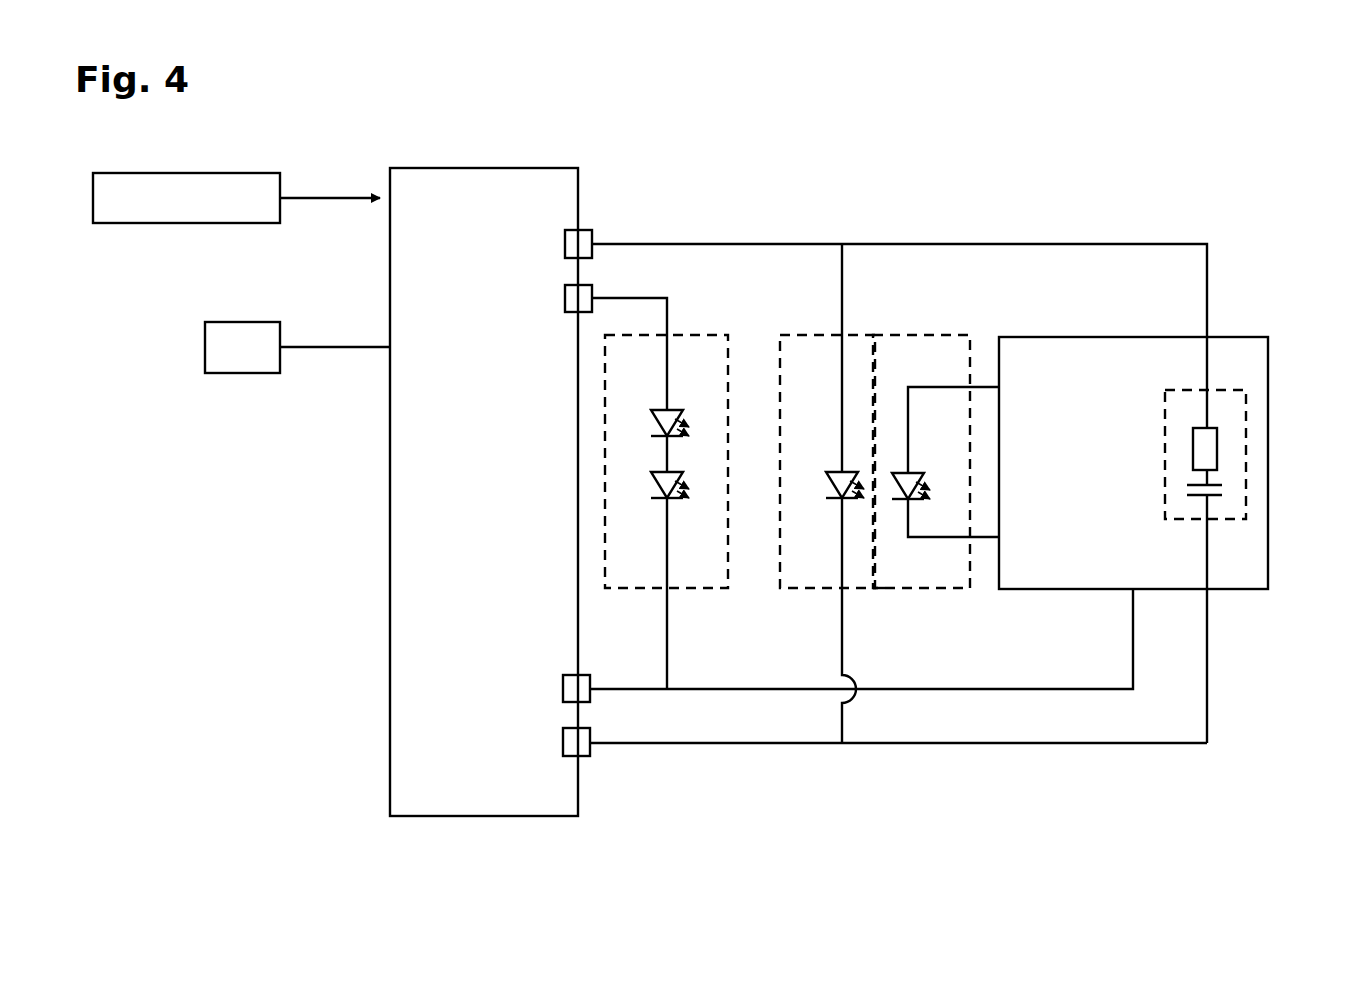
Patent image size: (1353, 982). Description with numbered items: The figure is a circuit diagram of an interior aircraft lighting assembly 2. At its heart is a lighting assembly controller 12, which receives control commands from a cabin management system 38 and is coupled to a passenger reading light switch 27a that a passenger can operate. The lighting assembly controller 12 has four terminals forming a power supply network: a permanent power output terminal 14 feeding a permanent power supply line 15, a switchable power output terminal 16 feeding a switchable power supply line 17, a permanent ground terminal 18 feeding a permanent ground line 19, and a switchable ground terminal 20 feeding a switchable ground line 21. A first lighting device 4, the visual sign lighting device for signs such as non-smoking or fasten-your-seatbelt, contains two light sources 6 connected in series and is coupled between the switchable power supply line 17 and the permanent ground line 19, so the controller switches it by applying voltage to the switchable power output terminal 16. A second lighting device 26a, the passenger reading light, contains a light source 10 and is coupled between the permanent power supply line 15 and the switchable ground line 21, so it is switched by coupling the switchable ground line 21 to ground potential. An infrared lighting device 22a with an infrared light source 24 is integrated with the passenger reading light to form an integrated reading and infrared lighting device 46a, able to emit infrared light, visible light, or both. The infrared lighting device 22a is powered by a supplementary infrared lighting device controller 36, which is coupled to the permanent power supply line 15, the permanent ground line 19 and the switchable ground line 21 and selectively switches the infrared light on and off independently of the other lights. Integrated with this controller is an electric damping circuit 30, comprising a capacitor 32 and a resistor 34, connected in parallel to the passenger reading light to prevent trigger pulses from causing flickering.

The interior aircraft lighting assembly 2 is at (1180, 158).
The first lighting device 4 is at (728, 322).
The light source 6 is at (648, 420).
The light source 10 is at (828, 472).
The lighting assembly controller 12 is at (390, 537).
The permanent power output terminal 14 is at (565, 243).
The permanent power supply line 15 is at (953, 244).
The switchable power output terminal 16 is at (565, 299).
The switchable power supply line 17 is at (640, 298).
The permanent ground terminal 18 is at (563, 688).
The permanent ground line 19 is at (1038, 689).
The switchable ground terminal 20 is at (563, 742).
The switchable ground line 21 is at (902, 743).
The infrared lighting device 22a is at (962, 328).
The infrared light source 24 is at (925, 462).
The second lighting device 26a is at (808, 598).
The passenger reading light switch 27a is at (237, 373).
The electric damping circuit 30 is at (1246, 525).
The capacitor 32 is at (1222, 480).
The resistor 34 is at (1222, 440).
The supplementary infrared lighting device controller 36 is at (1252, 330).
The cabin management system 38 is at (208, 173).
The integrated reading and infrared lighting device 46a is at (878, 598).